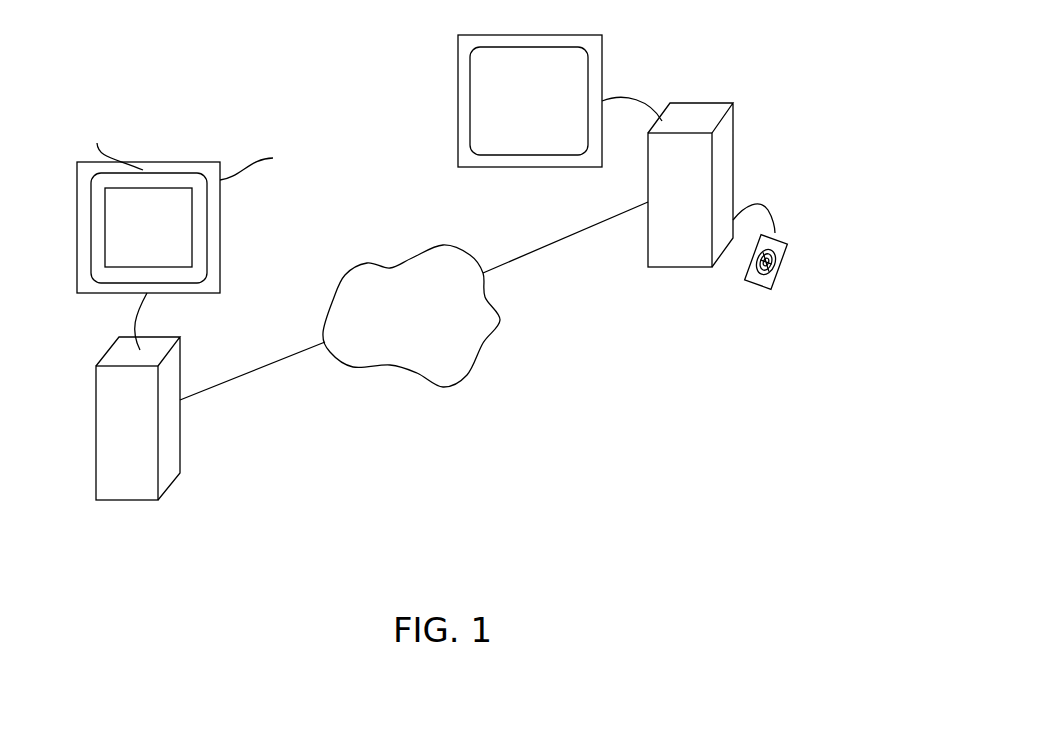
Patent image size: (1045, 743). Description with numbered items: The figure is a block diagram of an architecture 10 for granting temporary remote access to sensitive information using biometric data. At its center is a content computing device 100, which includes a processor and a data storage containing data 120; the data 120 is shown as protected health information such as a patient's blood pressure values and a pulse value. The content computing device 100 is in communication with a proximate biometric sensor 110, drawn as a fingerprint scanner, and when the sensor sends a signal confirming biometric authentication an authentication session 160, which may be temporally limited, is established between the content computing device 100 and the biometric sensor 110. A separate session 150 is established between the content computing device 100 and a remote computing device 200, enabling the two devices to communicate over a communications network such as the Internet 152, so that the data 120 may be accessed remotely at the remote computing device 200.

The architecture 10 is at (269, 19).
The content computing device 100 is at (733, 173).
The biometric sensor 110 is at (783, 268).
The data 120 is at (602, 53).
The session 150 is at (555, 240).
The Internet 152 is at (460, 387).
The authentication session 160 is at (772, 212).
The remote computing device 200 is at (170, 486).